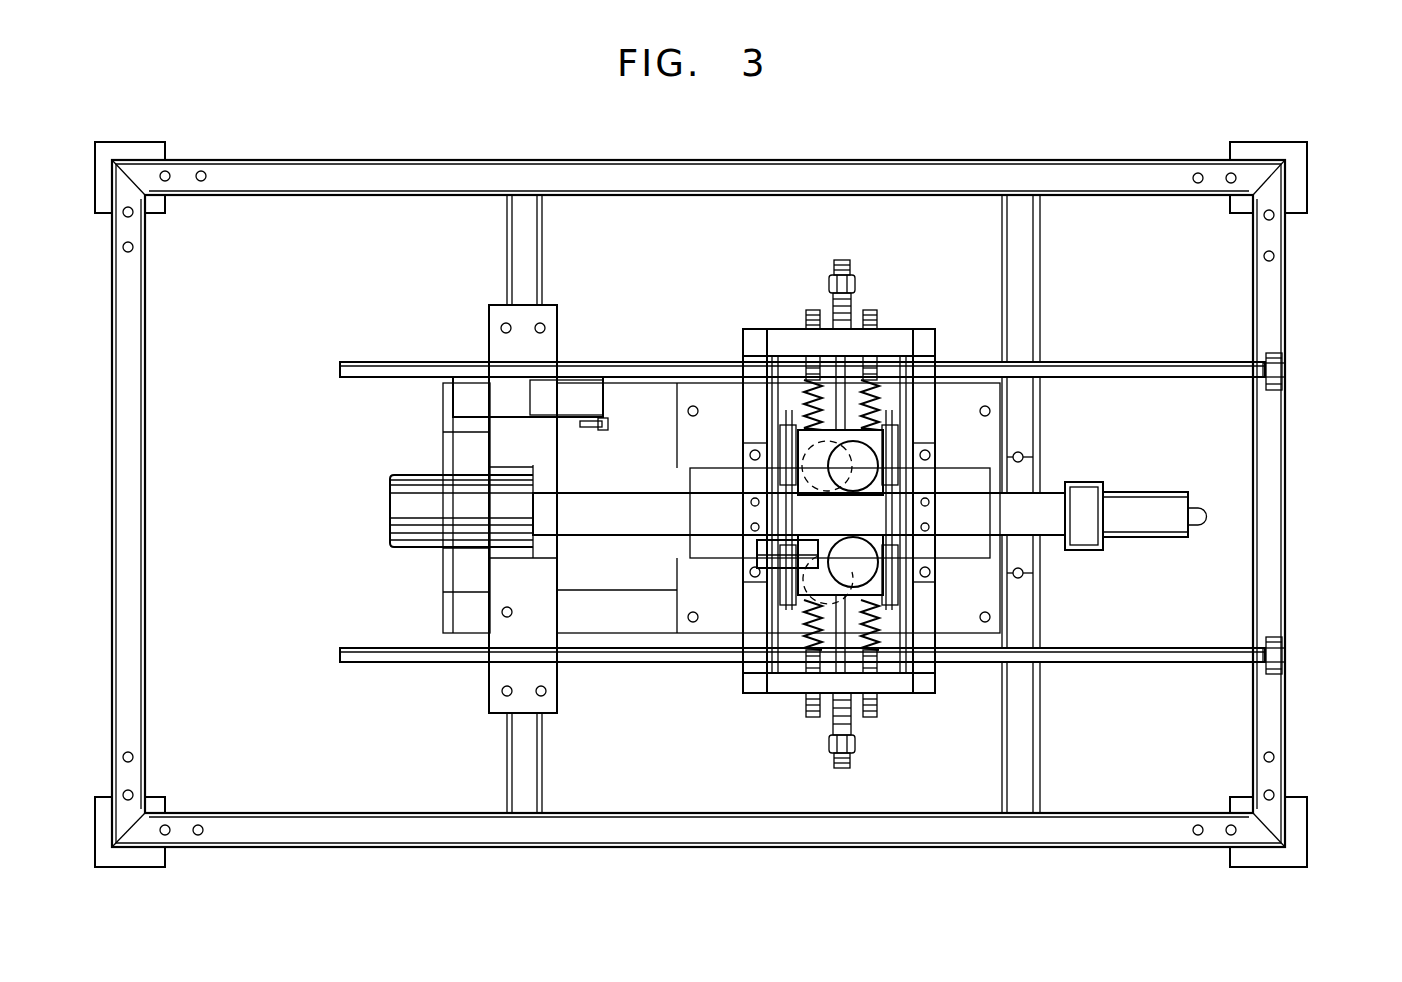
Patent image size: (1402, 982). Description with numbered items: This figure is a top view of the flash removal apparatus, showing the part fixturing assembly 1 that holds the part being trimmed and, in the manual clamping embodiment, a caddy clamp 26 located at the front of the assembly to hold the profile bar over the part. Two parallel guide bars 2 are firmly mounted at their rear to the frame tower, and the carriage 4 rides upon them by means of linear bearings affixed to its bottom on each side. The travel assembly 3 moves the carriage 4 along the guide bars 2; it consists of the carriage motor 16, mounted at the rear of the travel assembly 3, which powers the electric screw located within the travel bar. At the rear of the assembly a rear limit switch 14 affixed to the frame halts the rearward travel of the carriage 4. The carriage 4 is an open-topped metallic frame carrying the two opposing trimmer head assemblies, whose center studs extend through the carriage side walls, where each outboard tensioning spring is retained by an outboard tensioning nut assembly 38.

The part fixturing assembly 1 is at (748, 504).
The guide bars 2 is at (430, 362).
The travel assembly 3 is at (799, 613).
The carriage 4 is at (794, 493).
The rear limit switch 14 is at (605, 430).
The carriage motor 16 is at (408, 475).
The caddy clamp 26 is at (1205, 510).
The outboard tensioning nut assembly 38 is at (786, 505).